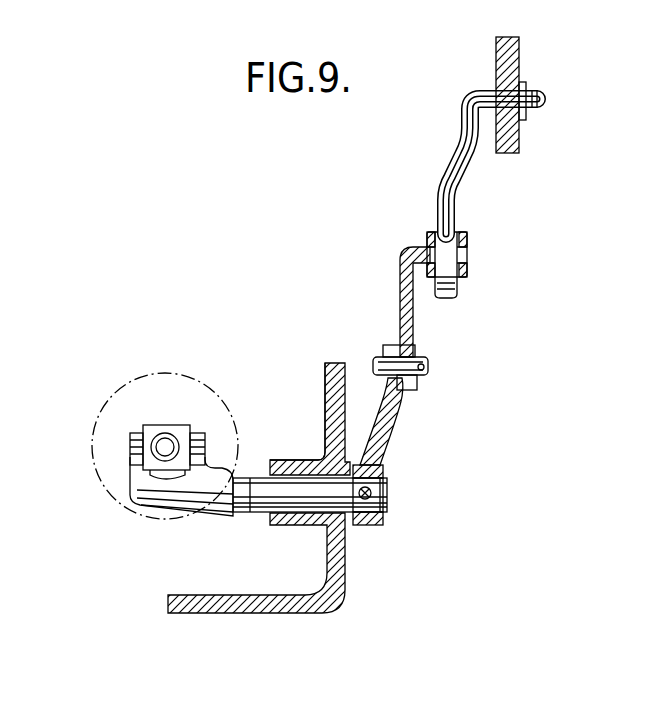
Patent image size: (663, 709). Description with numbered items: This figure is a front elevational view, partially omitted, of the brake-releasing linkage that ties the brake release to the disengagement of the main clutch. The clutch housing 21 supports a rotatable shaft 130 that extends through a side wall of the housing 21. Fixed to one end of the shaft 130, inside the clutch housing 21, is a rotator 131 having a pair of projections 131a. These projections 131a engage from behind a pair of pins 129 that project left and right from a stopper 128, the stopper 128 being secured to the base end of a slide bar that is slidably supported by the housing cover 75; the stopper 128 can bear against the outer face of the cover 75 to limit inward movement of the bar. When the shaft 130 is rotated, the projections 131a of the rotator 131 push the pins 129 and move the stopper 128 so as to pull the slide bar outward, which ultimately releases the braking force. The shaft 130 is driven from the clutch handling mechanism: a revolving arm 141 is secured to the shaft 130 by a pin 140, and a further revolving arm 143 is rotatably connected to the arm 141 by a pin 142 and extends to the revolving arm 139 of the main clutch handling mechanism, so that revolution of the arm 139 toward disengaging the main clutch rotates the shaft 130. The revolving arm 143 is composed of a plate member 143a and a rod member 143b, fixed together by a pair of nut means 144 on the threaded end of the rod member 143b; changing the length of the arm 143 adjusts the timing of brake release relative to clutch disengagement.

The clutch housing 21 is at (257, 598).
The housing cover 75 is at (172, 372).
The stopper 128 is at (157, 428).
The pins 129 is at (130, 446).
The rotatable shaft 130 is at (347, 525).
The rotator 131 is at (133, 509).
The projections 131a is at (133, 432).
The revolving arm 139 is at (520, 60).
The pin 140 is at (385, 510).
The revolving arm 141 is at (395, 413).
The pin 142 is at (418, 356).
The revolving arm 143 is at (416, 234).
The plate member 143a is at (400, 293).
The rod member 143b is at (480, 168).
The nut means 144 is at (467, 256).